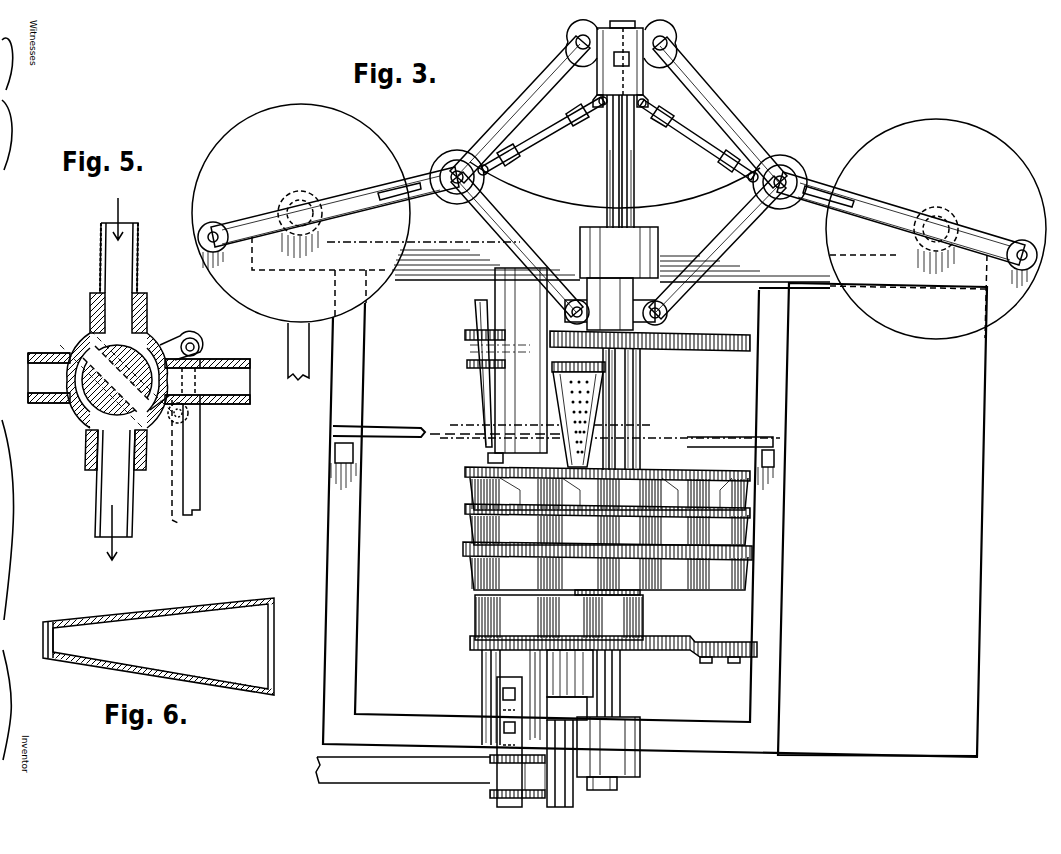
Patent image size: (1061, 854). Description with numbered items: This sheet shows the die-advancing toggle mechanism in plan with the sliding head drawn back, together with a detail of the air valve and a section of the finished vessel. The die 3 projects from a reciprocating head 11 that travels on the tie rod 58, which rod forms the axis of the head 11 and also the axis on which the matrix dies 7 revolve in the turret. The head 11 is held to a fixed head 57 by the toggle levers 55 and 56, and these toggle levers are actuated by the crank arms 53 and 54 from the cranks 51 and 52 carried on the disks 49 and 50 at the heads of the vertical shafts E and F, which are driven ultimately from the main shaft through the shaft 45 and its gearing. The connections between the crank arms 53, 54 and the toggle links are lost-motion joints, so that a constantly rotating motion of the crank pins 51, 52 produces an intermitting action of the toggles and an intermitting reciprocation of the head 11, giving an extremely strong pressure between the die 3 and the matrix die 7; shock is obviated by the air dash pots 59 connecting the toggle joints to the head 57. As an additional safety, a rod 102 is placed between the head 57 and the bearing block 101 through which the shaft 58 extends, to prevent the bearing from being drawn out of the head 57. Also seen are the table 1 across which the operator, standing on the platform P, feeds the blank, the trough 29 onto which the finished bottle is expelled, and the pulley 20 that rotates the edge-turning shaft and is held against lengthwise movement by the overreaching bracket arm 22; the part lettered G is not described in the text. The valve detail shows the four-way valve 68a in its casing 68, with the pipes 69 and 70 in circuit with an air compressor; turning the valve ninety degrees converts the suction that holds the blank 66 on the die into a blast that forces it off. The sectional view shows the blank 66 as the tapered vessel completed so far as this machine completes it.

In FIG. 3, the table 1 is at (871, 260).
In FIG. 3, the die 3 is at (590, 391).
In FIG. 3, the matrix die 7 is at (609, 494).
In FIG. 3, the reciprocating head 11 is at (696, 336).
In FIG. 3, the pulley 20 is at (482, 771).
In FIG. 3, the overreaching bracket arm 22 is at (500, 730).
In FIG. 3, the trough 29 is at (495, 385).
In FIG. 3, the shaft 45 is at (296, 382).
In FIG. 3, the disk 49 is at (905, 322).
In FIG. 3, the disk 50 is at (262, 318).
In FIG. 3, the crank 51 is at (1012, 268).
In FIG. 3, the crank 52 is at (212, 222).
In FIG. 3, the crank arm 53 is at (988, 232).
In FIG. 3, the crank arm 54 is at (249, 218).
In FIG. 3, the toggle lever 55 is at (738, 108).
In FIG. 3, the toggle lever 56 is at (520, 102).
In FIG. 3, the fixed head 57 is at (612, 80).
In FIG. 3, the tie rod 58 is at (636, 160).
In FIG. 3, the air dash pot 59 is at (548, 148).
In FIG. 3, the bearing block 101 is at (660, 236).
In FIG. 3, the rod 102 is at (636, 190).
In FIG. 6, the blank 66 is at (156, 618).
In FIG. 5, the valve casing 68 is at (95, 340).
In FIG. 5, the four-way valve 68a is at (139, 378).
In FIG. 5, the pipe 69 is at (100, 252).
In FIG. 5, the pipe 70 is at (98, 500).
In FIG. 3, the vertical shaft E is at (940, 215).
In FIG. 3, the vertical shaft F is at (300, 190).
In FIG. 3, the guide piece G is at (483, 668).
In FIG. 3, the platform P is at (850, 527).